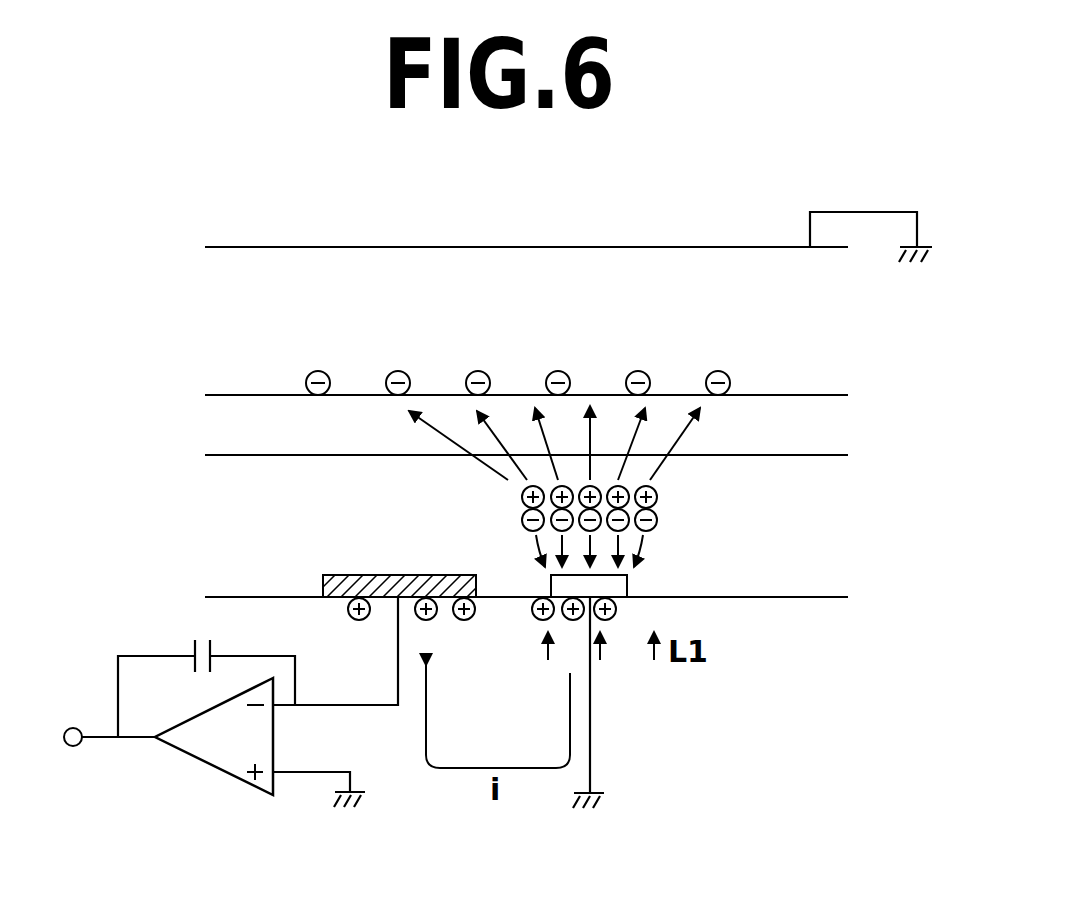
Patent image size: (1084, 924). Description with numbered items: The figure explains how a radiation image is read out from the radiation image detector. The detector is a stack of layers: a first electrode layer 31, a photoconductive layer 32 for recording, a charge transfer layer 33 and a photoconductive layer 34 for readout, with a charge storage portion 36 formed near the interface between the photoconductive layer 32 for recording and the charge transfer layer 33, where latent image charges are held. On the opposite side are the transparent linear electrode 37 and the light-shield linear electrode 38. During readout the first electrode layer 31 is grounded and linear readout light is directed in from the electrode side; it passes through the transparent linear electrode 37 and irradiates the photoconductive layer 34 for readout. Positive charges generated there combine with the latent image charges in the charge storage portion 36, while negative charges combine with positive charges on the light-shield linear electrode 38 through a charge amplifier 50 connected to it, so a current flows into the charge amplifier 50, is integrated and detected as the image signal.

The first electrode layer 31 is at (207, 246).
The photoconductive layer for recording 32 is at (218, 306).
The charge transfer layer 33 is at (218, 420).
The photoconductive layer for readout 34 is at (218, 480).
The charge storage portion 36 is at (243, 390).
The transparent linear electrode 37 is at (620, 586).
The light-shield linear electrode 38 is at (337, 575).
The charge amplifier 50 is at (219, 800).